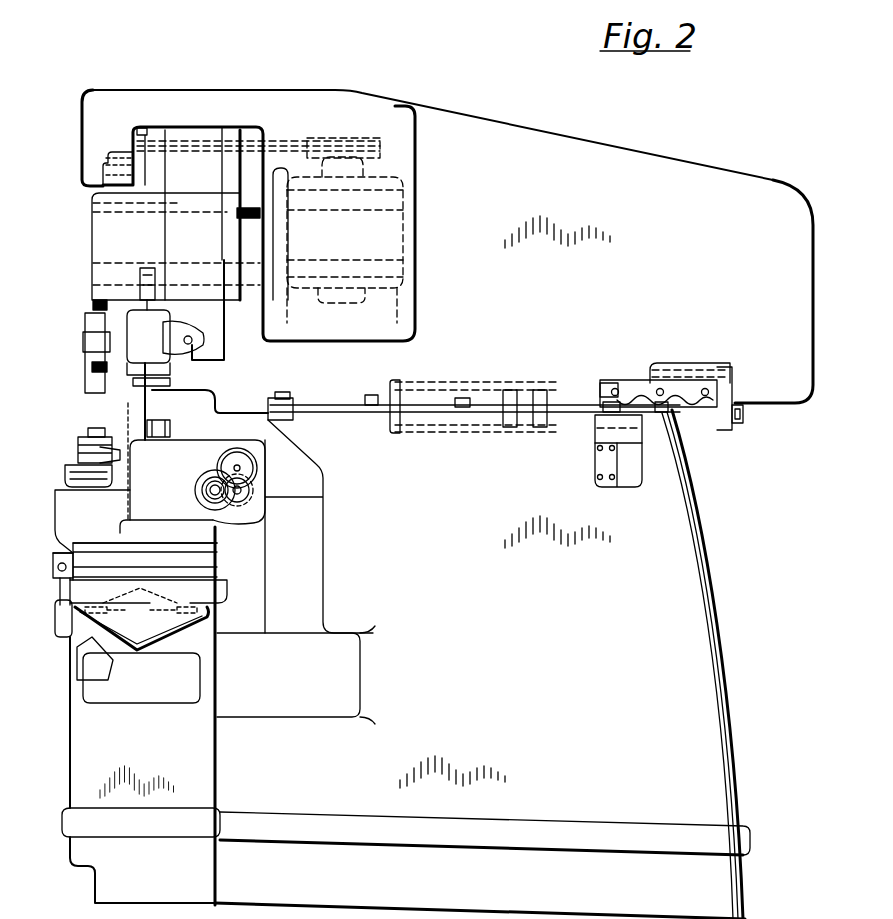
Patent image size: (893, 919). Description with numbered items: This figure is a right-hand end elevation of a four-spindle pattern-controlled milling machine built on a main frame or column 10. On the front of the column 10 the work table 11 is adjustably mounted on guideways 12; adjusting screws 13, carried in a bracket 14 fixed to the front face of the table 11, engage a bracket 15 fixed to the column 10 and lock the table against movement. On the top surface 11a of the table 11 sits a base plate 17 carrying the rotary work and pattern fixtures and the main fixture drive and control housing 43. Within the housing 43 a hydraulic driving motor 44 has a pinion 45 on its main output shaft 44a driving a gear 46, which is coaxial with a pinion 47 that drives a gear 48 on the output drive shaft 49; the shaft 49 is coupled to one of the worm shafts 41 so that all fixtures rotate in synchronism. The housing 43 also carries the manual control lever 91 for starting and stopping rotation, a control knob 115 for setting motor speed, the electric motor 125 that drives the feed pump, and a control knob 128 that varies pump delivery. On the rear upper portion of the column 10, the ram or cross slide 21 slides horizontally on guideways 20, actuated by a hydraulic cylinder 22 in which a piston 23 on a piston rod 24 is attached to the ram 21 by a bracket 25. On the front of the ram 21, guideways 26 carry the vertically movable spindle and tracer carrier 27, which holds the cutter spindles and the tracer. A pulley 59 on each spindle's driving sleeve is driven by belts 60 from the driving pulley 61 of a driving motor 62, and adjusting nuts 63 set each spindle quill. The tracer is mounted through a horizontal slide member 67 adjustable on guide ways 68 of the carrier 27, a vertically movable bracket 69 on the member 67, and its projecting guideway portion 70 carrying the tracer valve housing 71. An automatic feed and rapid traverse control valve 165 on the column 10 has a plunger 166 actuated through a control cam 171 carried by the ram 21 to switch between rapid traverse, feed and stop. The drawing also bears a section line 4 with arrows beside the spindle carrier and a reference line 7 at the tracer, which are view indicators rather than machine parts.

The section line 4 is at (120, 409).
The rod 7 is at (148, 403).
The main frame or column 10 is at (697, 566).
The work table 11 is at (203, 590).
The top surface of the table 11a is at (97, 550).
The guideways 12 is at (142, 628).
The adjusting screws 13 is at (53, 565).
The bracket 14 is at (57, 553).
The bracket 15 is at (55, 613).
The base plate 17 is at (210, 552).
The guideways 20 is at (252, 412).
The ram or cross slide 21 is at (728, 176).
The hydraulic cylinder 22 is at (467, 432).
The piston 23 is at (517, 392).
The piston rod 24 is at (562, 390).
The bracket 25 is at (722, 423).
The guideways 26 is at (172, 386).
The spindle and tracer carrier 27 is at (83, 347).
The shafts 41 is at (237, 465).
The main fixture drive and control housing 43 is at (195, 443).
The hydraulic driving motor 44 is at (202, 482).
The main output shaft 44a is at (207, 498).
The pinion 45 is at (208, 490).
The gear 46 is at (253, 487).
The pinion 47 is at (253, 503).
The gear 48 is at (257, 470).
The output drive shaft 49 is at (258, 452).
The pulley 59 is at (147, 130).
The belts 60 is at (298, 131).
The driving pulley 61 is at (347, 141).
The driving motor 62 is at (382, 282).
The adjusting nuts 63 is at (93, 303).
The horizontal slide member 67 is at (100, 240).
The guide ways 68 is at (203, 273).
The vertically movable bracket 69 is at (213, 333).
The projecting guideway portion 70 is at (180, 332).
The tracer valve housing 71 is at (148, 342).
The manual control lever 91 is at (76, 450).
The control knob 115 is at (165, 440).
The electric motor 125 is at (75, 442).
The control knob 128 is at (68, 470).
The automatic feed and rapid traverse control valve 165 is at (632, 463).
The plunger 166 is at (603, 397).
The control cam 171 is at (660, 390).